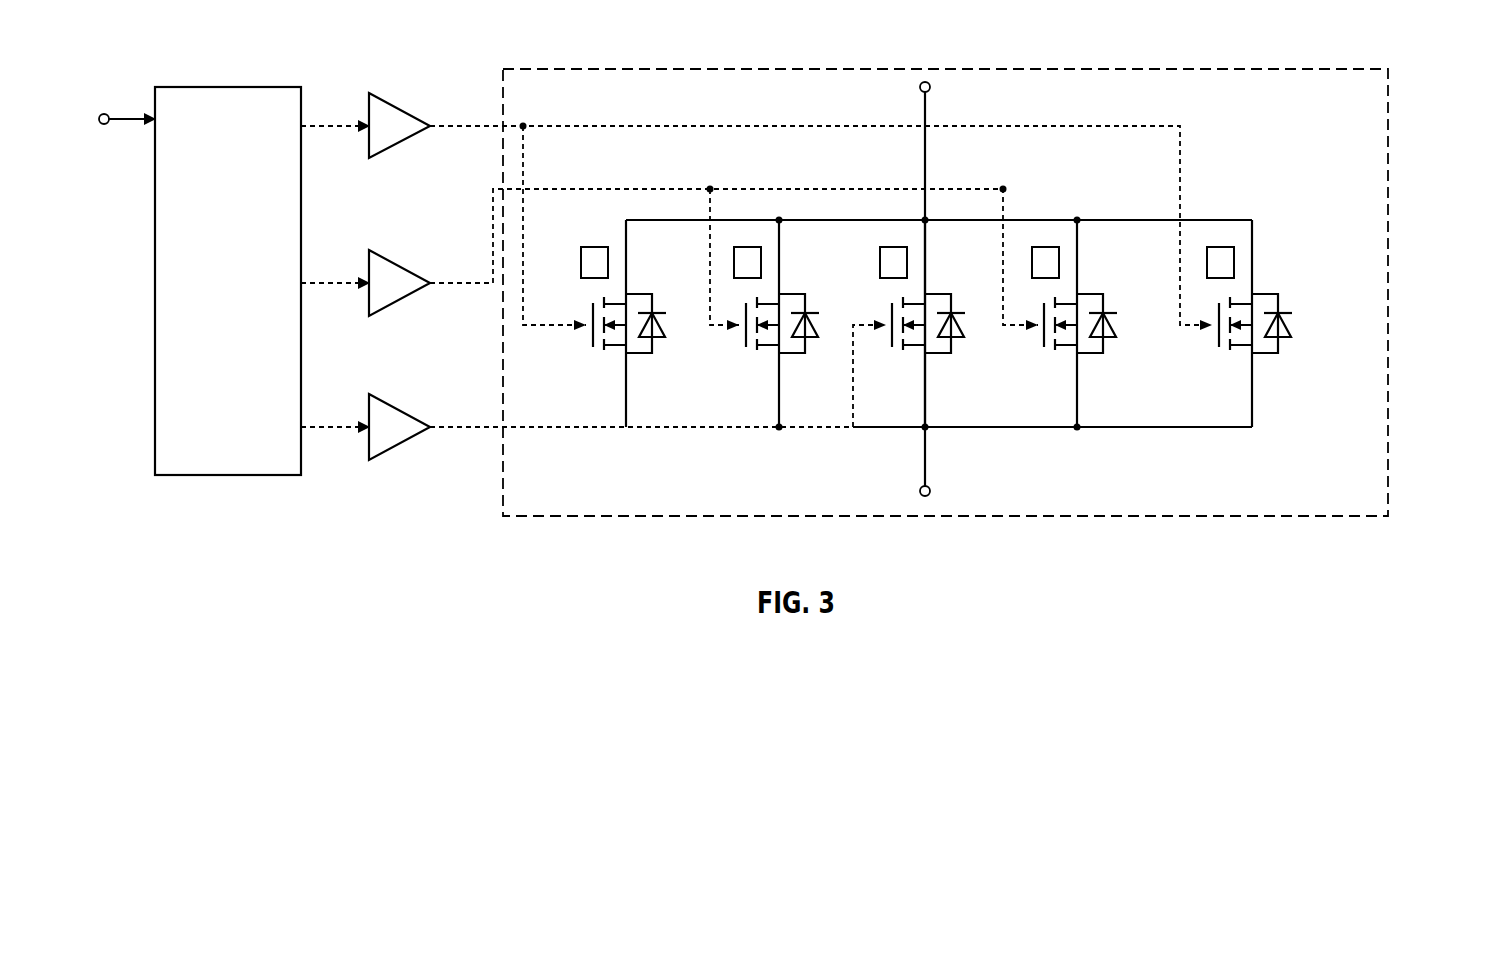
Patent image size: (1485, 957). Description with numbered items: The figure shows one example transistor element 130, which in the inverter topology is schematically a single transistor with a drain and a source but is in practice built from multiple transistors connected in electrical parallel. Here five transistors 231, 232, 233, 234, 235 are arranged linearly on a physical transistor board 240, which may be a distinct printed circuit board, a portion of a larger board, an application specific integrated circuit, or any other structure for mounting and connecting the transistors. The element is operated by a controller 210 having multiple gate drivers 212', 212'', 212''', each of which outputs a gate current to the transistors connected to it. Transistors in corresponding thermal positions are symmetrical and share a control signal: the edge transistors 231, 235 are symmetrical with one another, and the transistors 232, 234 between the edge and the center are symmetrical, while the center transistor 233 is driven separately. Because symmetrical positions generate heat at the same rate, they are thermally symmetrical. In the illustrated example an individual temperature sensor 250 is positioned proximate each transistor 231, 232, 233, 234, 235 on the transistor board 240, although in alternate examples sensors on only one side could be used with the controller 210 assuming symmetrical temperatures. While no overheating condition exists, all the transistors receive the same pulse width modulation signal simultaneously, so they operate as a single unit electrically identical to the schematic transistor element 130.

The transistor element 130 is at (951, 260).
The controller 210 is at (230, 87).
The gate driver 212' is at (371, 99).
The gate driver 212'' is at (373, 255).
The gate driver 212''' is at (378, 404).
The transistor 231 is at (628, 362).
The transistor 232 is at (781, 375).
The transistor 233 is at (927, 362).
The transistor 234 is at (1079, 362).
The transistor 235 is at (1254, 362).
The transistor board 240 is at (1296, 105).
The temperature sensor 250 is at (594, 247).